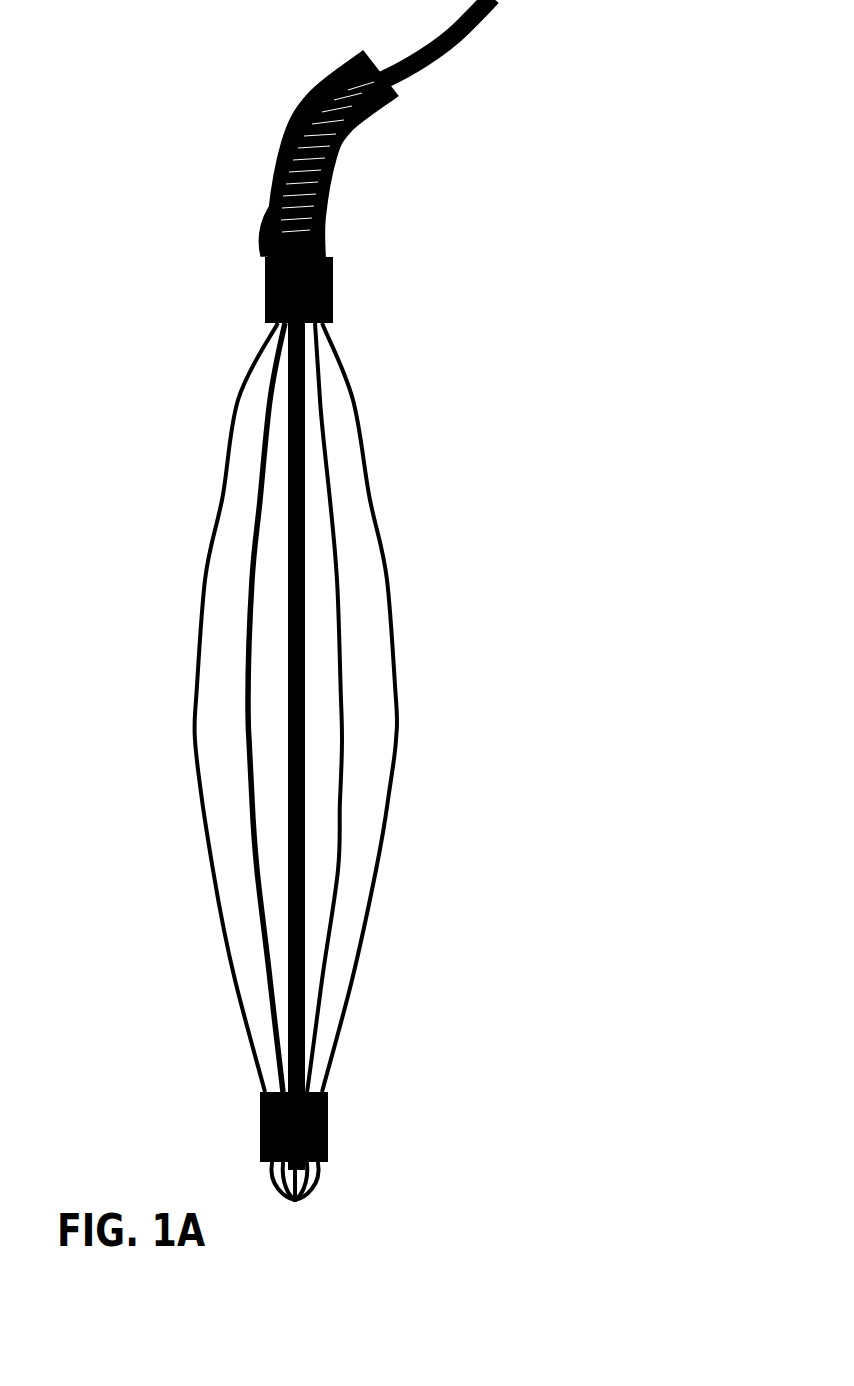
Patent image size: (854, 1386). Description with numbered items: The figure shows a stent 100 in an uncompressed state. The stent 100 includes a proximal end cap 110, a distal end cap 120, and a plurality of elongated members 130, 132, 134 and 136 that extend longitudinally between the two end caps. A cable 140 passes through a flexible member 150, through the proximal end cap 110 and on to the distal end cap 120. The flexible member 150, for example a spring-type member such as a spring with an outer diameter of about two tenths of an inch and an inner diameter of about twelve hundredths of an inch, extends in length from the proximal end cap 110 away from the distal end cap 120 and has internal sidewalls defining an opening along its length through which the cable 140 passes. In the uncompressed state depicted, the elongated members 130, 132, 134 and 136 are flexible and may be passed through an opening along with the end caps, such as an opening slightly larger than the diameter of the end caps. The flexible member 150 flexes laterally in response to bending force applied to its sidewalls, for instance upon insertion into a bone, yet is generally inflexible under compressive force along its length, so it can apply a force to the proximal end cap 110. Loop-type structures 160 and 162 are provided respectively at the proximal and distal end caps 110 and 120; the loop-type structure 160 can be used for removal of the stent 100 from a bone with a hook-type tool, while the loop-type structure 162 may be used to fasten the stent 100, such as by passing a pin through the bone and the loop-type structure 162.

The stent 100 is at (621, 58).
The proximal end cap 110 is at (334, 290).
The distal end cap 120 is at (330, 1122).
The elongated member 130 is at (386, 551).
The elongated member 132 is at (343, 678).
The elongated member 134 is at (248, 682).
The elongated member 136 is at (198, 622).
The cable 140 is at (430, 46).
The flexible member 150 is at (334, 191).
The loop-type structure 160 is at (258, 214).
The loop-type structure 162 is at (318, 1180).